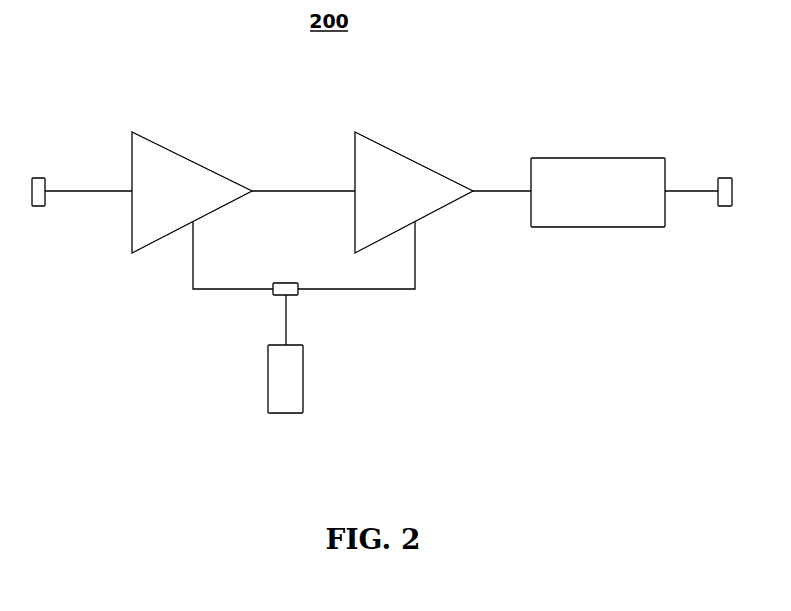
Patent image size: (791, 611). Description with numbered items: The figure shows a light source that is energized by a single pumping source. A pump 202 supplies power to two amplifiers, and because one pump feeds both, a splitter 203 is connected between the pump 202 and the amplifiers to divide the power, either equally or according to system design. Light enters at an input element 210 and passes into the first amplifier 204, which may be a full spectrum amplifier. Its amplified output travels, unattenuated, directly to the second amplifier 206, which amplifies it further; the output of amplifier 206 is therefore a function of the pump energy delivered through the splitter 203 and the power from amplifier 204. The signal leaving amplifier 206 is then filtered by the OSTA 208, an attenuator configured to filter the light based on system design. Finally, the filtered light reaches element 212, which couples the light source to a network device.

The pump 202 is at (303, 365).
The splitter 203 is at (288, 283).
The amplifier 204 is at (187, 160).
The amplifier 206 is at (410, 160).
The OSTA 208 is at (595, 158).
The input port 210 is at (40, 178).
The element 212 is at (728, 178).